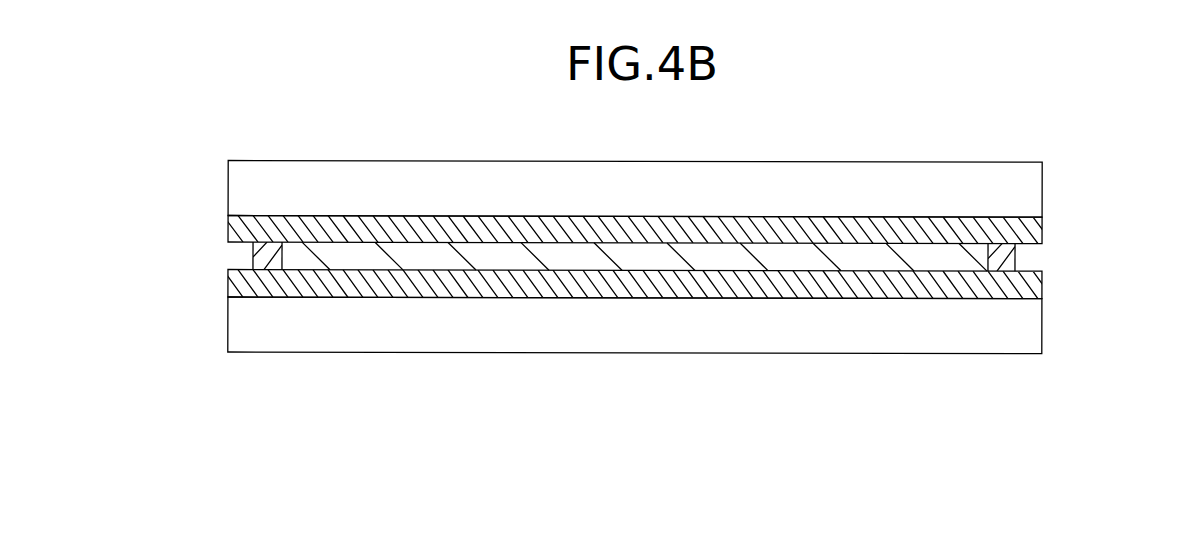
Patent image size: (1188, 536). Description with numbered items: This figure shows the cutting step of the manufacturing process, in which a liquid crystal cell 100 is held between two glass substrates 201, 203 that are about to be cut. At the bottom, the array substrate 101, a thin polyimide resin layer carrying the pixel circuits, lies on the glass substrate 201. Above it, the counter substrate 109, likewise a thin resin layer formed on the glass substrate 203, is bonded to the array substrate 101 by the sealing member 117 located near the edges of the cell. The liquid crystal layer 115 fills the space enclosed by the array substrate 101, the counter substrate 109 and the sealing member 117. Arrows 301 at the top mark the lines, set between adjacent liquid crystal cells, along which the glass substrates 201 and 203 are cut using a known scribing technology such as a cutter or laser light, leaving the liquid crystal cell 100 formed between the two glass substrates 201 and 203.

The liquid crystal cell 100 is at (630, 256).
The array substrate 101 is at (630, 283).
The counter substrate 109 is at (630, 229).
The liquid crystal layer 115 is at (644, 256).
The sealing member 117 is at (634, 256).
The glass substrate 201 is at (635, 325).
The glass substrate 203 is at (635, 189).
The arrows 301 is at (228, 140).